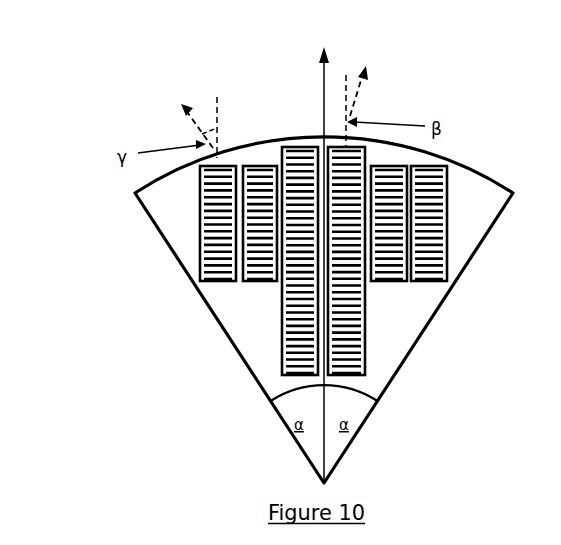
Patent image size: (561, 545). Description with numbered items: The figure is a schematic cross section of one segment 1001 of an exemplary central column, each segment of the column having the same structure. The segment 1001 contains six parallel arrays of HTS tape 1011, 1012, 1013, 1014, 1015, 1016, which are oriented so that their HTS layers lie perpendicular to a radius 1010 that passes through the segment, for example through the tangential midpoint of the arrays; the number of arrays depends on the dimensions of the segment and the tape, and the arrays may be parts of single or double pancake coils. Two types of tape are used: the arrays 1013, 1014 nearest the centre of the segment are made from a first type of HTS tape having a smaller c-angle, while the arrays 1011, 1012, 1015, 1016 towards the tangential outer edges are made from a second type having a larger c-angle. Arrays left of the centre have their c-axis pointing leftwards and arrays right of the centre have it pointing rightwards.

The segment 1001 is at (182, 270).
The radius 1010 is at (328, 251).
The array of HTS tape 1011 is at (218, 282).
The array of HTS tape 1012 is at (260, 282).
The array of HTS tape 1013 is at (292, 376).
The array of HTS tape 1014 is at (363, 350).
The array of HTS tape 1015 is at (392, 283).
The array of HTS tape 1016 is at (433, 283).